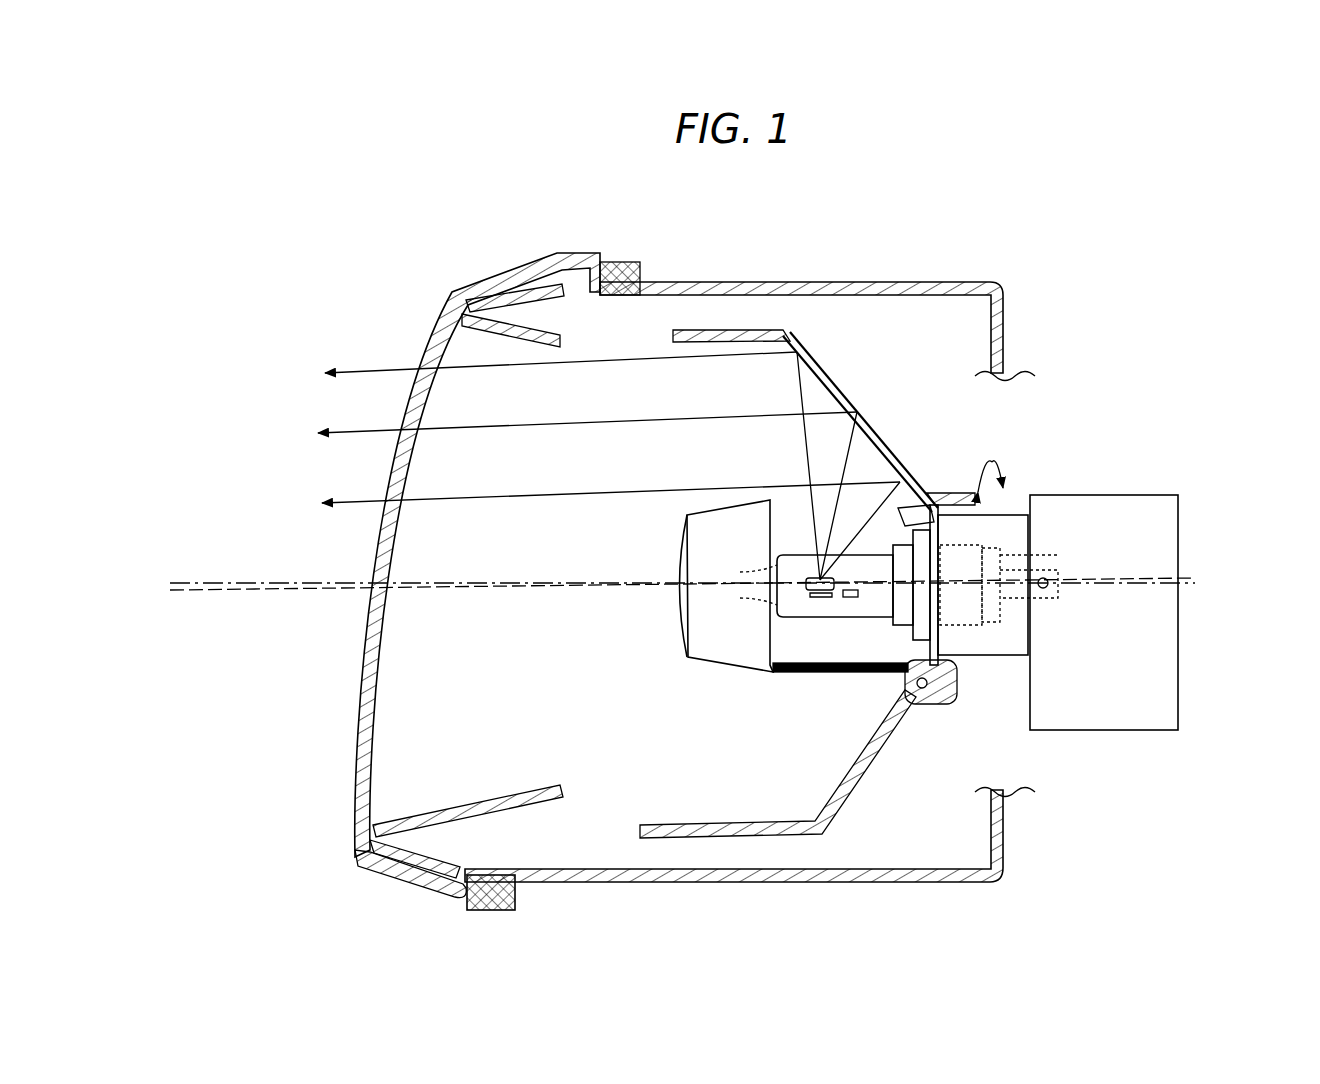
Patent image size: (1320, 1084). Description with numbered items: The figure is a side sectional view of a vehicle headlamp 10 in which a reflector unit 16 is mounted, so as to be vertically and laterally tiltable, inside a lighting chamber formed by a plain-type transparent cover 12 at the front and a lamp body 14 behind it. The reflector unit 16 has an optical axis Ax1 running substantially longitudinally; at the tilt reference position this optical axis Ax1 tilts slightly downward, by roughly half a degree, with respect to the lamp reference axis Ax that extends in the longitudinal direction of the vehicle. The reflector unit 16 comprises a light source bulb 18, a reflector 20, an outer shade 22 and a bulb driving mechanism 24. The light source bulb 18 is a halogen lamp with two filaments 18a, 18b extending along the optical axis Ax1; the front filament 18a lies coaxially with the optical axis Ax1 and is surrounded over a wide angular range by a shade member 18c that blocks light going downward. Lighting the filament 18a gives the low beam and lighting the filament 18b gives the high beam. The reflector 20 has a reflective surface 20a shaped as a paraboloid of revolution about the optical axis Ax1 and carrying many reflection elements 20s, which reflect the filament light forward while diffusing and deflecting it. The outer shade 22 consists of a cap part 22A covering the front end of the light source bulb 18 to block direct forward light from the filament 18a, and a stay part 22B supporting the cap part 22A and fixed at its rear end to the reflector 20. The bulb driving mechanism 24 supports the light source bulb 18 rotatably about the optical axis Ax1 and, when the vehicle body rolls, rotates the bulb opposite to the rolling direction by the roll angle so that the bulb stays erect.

The vehicle headlamp 10 is at (405, 243).
The transparent cover 12 is at (437, 333).
The lamp body 14 is at (1010, 300).
The reflector unit 16 is at (600, 630).
The light source bulb 18 is at (975, 540).
The filament 18a is at (815, 562).
The filament 18b is at (848, 598).
The shade member 18c is at (800, 612).
The reflector 20 is at (873, 415).
The reflection elements 20s is at (874, 443).
The reflective surface 20a is at (860, 757).
The outer shade 22 is at (678, 540).
The cap part 22A is at (700, 652).
The stay part 22B is at (840, 677).
The bulb driving mechanism 24 is at (1133, 497).
The lamp reference axis Ax is at (245, 582).
The optical axis Ax1 is at (265, 592).